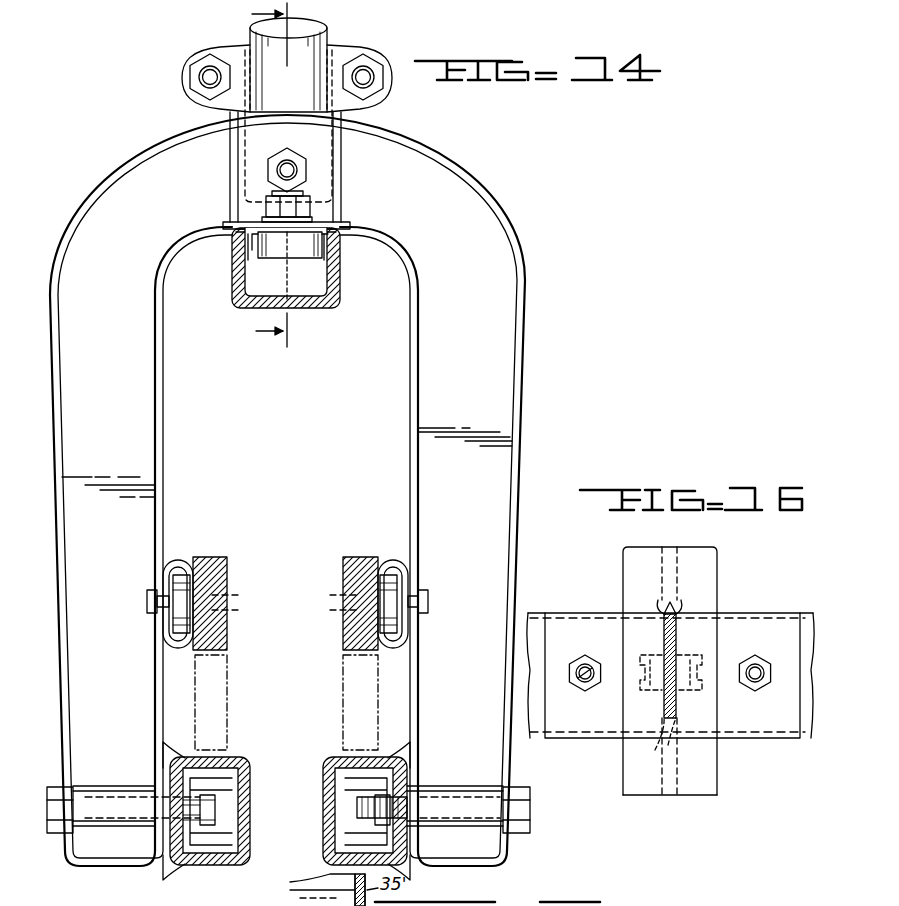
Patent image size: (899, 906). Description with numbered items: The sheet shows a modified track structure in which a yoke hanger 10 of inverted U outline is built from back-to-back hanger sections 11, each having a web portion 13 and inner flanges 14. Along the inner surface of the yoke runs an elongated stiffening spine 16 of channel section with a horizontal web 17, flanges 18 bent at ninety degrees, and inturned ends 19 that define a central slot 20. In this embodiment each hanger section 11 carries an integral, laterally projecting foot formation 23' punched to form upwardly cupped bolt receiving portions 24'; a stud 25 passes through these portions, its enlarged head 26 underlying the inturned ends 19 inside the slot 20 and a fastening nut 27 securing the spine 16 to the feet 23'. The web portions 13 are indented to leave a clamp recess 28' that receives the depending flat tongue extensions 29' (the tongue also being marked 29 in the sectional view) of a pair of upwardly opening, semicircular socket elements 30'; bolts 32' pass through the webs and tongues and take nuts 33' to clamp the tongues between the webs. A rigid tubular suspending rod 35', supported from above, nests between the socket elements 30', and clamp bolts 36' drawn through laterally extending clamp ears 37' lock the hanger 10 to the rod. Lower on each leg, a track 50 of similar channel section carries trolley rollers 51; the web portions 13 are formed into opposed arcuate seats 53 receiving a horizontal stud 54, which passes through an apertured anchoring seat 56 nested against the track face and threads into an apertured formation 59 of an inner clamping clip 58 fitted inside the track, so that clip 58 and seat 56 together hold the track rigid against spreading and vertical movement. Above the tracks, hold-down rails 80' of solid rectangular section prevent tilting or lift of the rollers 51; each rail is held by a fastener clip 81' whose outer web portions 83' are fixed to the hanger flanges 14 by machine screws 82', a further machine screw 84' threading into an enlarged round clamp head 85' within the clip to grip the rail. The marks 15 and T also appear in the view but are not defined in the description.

In FIG. 14, the hanger 10 is at (300, 502).
In FIG. 14, the hanger section 11 is at (300, 502).
In FIG. 14, the web portion 13 is at (300, 502).
In FIG. 16, the web portion 13 is at (687, 674).
In FIG. 14, the inner flange 14 is at (558, 240).
In FIG. 16, the inner flange 14 is at (670, 552).
In FIG. 14, the center line 15 is at (256, 175).
In FIG. 14, the stiffening spine 16 is at (295, 558).
In FIG. 14, the horizontal web 17 is at (300, 296).
In FIG. 14, the flange 18 is at (286, 558).
In FIG. 14, the inturned end 19 is at (335, 240).
In FIG. 14, the central slot 20 is at (312, 220).
In FIG. 14, the foot formation 23' is at (261, 244).
In FIG. 16, the foot formation 23' is at (670, 658).
In FIG. 14, the bolt receiving portion 24' is at (249, 227).
In FIG. 14, the stud 25 is at (290, 258).
In FIG. 16, the stud 25 is at (590, 688).
In FIG. 14, the enlarged head 26 is at (252, 248).
In FIG. 14, the fastening nut 27 is at (266, 207).
In FIG. 16, the fastening nut 27 is at (582, 688).
In FIG. 14, the clamp recess 28' is at (287, 136).
In FIG. 16, the clamp recess 28' is at (700, 671).
In FIG. 14, the tongue extension 29' is at (310, 136).
In FIG. 16, the bolt 29 is at (657, 671).
In FIG. 14, the socket element 30' is at (304, 91).
In FIG. 14, the bolt 32' is at (292, 159).
In FIG. 16, the bolt 32' is at (645, 691).
In FIG. 16, the nut 33' is at (715, 689).
In FIG. 14, the tubular suspending rod 35' is at (315, 65).
In FIG. 14, the clamp bolt 36' is at (263, 78).
In FIG. 14, the clamp ear 37' is at (304, 97).
In FIG. 14, the track 50 is at (307, 788).
In FIG. 14, the trolley roller 51 is at (227, 700).
In FIG. 14, the arcuate seat 53 is at (105, 822).
In FIG. 14, the stud 54 is at (307, 803).
In FIG. 14, the anchoring seat 56 is at (175, 745).
In FIG. 14, the clamping clip 58 is at (380, 760).
In FIG. 14, the apertured formation 59 is at (218, 790).
In FIG. 14, the hold-down rail 80' is at (285, 599).
In FIG. 14, the fastener clip 81' is at (264, 587).
In FIG. 14, the machine screw 82' is at (287, 582).
In FIG. 14, the outer web portion 83' is at (263, 604).
In FIG. 14, the machine screw 84' is at (286, 615).
In FIG. 14, the clamp head 85' is at (287, 613).
In FIG. 14, the tie member T is at (340, 683).